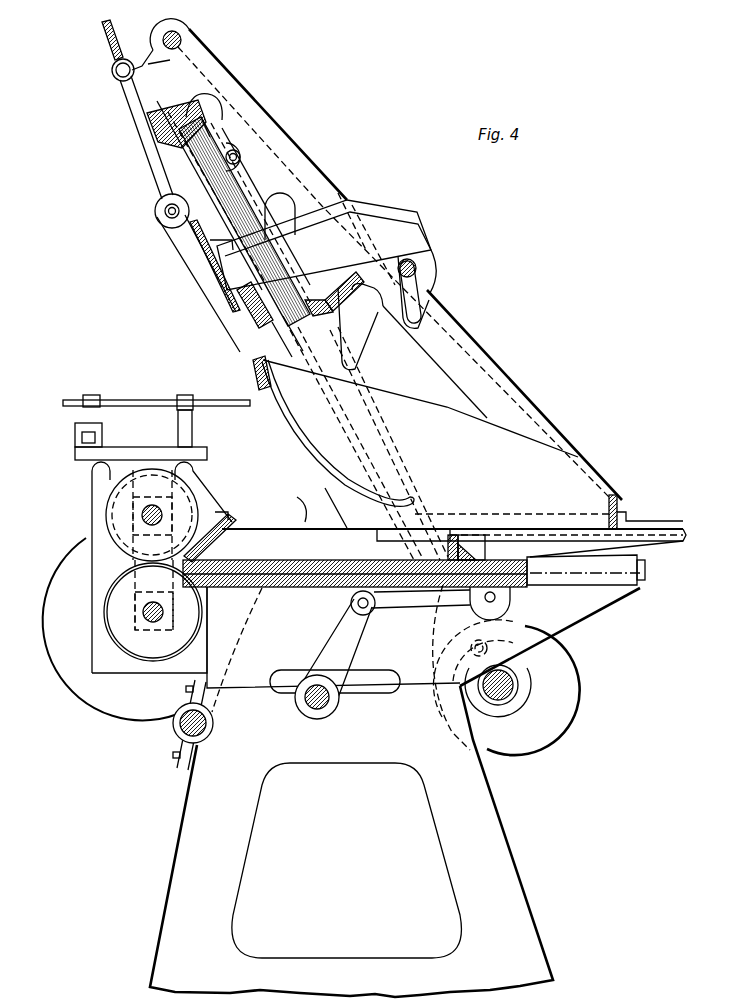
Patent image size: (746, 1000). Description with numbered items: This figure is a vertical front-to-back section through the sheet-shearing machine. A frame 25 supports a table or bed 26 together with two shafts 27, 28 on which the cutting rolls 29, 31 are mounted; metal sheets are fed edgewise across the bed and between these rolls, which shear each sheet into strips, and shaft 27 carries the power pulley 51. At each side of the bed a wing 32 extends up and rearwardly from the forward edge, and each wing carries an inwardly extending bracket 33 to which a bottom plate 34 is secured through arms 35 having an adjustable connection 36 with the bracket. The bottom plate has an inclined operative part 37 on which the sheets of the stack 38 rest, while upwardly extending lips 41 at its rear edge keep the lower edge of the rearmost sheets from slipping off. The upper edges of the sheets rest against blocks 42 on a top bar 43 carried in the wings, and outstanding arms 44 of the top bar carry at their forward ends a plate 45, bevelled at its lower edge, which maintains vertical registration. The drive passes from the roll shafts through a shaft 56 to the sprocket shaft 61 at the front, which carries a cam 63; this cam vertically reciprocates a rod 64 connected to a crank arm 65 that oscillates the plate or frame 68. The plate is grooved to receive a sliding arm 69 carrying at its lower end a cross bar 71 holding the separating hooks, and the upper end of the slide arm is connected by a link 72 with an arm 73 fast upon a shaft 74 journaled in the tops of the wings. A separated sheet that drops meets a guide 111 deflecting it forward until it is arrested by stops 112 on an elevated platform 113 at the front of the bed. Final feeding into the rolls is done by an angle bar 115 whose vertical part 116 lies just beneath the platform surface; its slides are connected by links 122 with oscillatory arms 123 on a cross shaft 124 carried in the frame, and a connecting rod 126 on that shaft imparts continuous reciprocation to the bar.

The frame 25 is at (482, 793).
The table or bed 26 is at (540, 590).
The shaft 27 is at (150, 622).
The shaft 28 is at (165, 512).
The cutting roll 29 is at (133, 616).
The cutting roll 31 is at (100, 503).
The wing 32 is at (490, 385).
The bracket 33 is at (418, 220).
The bottom plate 34 is at (382, 340).
The arm 35 is at (378, 280).
The adjustable connection 36 is at (420, 268).
The inclined operative part 37 is at (352, 272).
The stack 38 is at (275, 226).
The lip 41 is at (256, 360).
The block 42 is at (193, 178).
The top bar 43 is at (183, 110).
The outstanding arm 44 is at (205, 125).
The plate 45 is at (203, 117).
The power pulley 51 is at (47, 590).
The shaft 56 is at (178, 728).
The sprocket shaft 61 is at (510, 683).
The cam 63 is at (540, 712).
The bar or rod 64 is at (362, 394).
The crank arm 65 is at (156, 204).
The oscillating plate or frame 68 is at (200, 254).
The sliding arm 69 is at (232, 290).
The cross bar 71 is at (248, 320).
The link 72 is at (153, 158).
The arm 73 is at (138, 55).
The shaft 74 is at (178, 36).
The guide 111 is at (340, 463).
The stop 112 is at (618, 498).
The elevated platform 113 is at (575, 543).
The angle bar 115 is at (470, 540).
The vertical part 116 is at (455, 537).
The link 122 is at (411, 605).
The oscillatory arm 123 is at (345, 645).
The cross shaft 124 is at (287, 703).
The connecting rod 126 is at (486, 545).